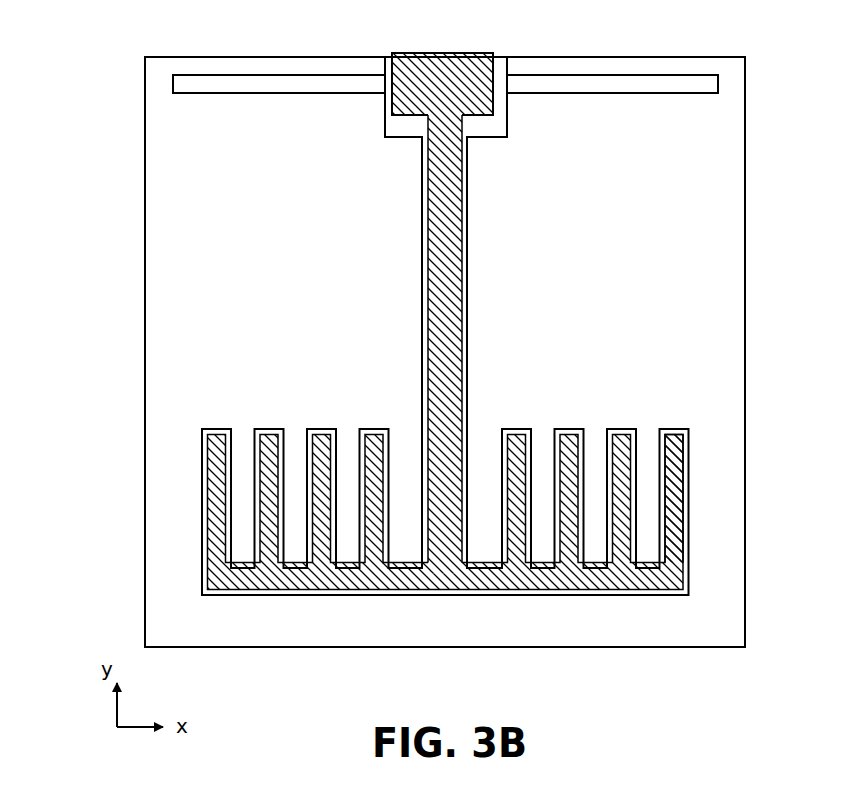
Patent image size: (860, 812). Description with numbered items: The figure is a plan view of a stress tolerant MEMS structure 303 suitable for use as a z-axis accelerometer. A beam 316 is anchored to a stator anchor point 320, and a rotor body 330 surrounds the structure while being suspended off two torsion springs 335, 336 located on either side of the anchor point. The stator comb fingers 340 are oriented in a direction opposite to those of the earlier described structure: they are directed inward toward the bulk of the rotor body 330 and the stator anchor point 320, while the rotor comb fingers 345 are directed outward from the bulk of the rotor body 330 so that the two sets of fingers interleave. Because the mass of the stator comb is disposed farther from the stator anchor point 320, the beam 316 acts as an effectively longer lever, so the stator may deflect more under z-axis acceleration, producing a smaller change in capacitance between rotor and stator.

The MEMS structure 303 is at (80, 105).
The beam 316 is at (452, 237).
The stator anchor point 320 is at (460, 90).
The rotor body 330 is at (296, 270).
The torsion spring 335 is at (300, 63).
The torsion spring 336 is at (605, 67).
The stator comb fingers 340 is at (684, 509).
The rotor comb fingers 345 is at (645, 452).